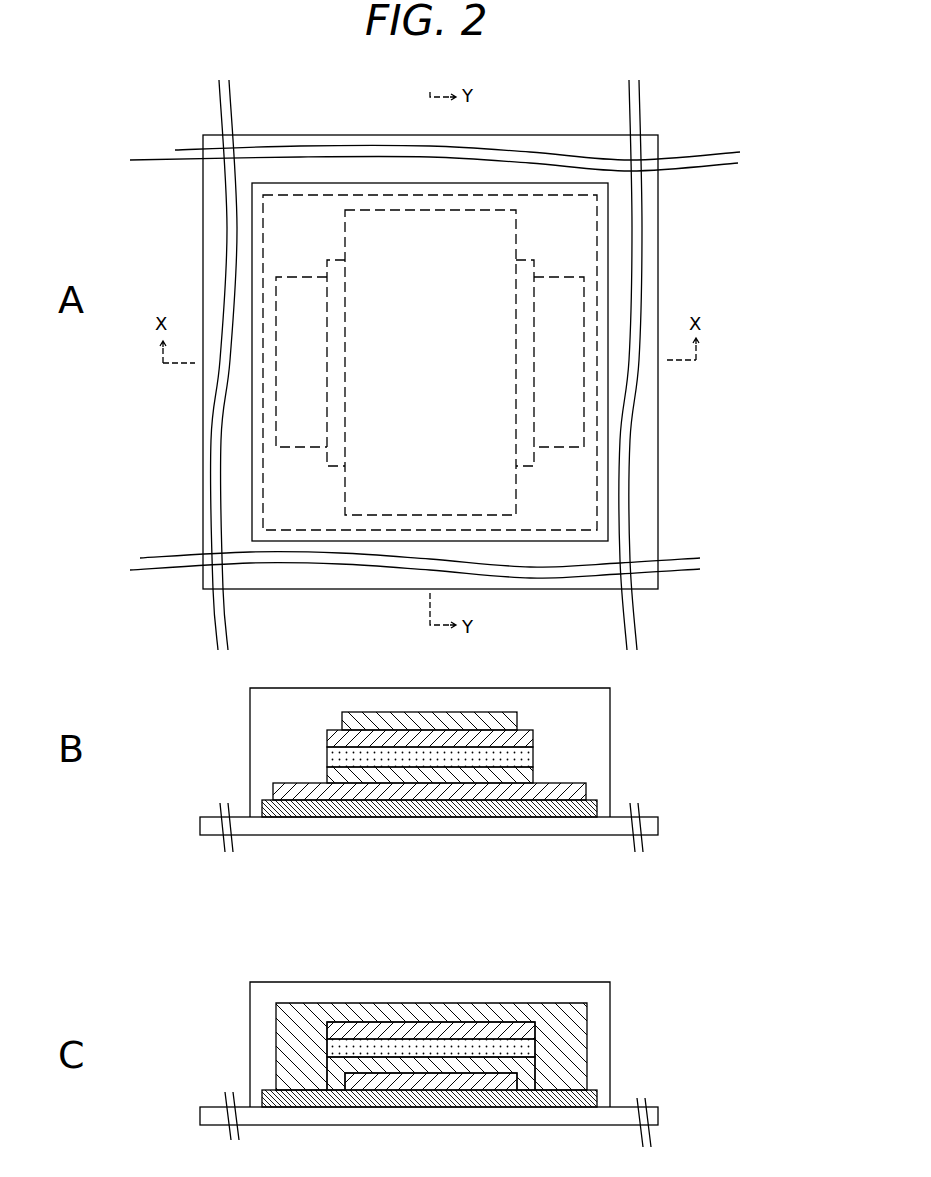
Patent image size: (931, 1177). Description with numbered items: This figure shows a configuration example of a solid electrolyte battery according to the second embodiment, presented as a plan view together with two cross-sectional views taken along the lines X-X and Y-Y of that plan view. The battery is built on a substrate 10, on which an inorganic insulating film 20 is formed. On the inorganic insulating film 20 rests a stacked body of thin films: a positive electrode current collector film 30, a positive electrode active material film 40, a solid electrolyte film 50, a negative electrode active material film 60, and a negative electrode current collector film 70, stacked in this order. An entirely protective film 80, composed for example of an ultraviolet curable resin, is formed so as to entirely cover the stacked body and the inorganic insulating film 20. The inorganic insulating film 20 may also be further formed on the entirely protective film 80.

The substrate 10 is at (652, 143).
The inorganic insulating film 20 is at (590, 242).
The positive electrode current collector film 30 is at (578, 294).
The positive electrode active material film 40 is at (523, 430).
The solid electrolyte film 50 is at (533, 750).
The negative electrode active material film 60 is at (533, 732).
The negative electrode current collector film 70 is at (503, 495).
The entirely protective film 80 is at (610, 187).